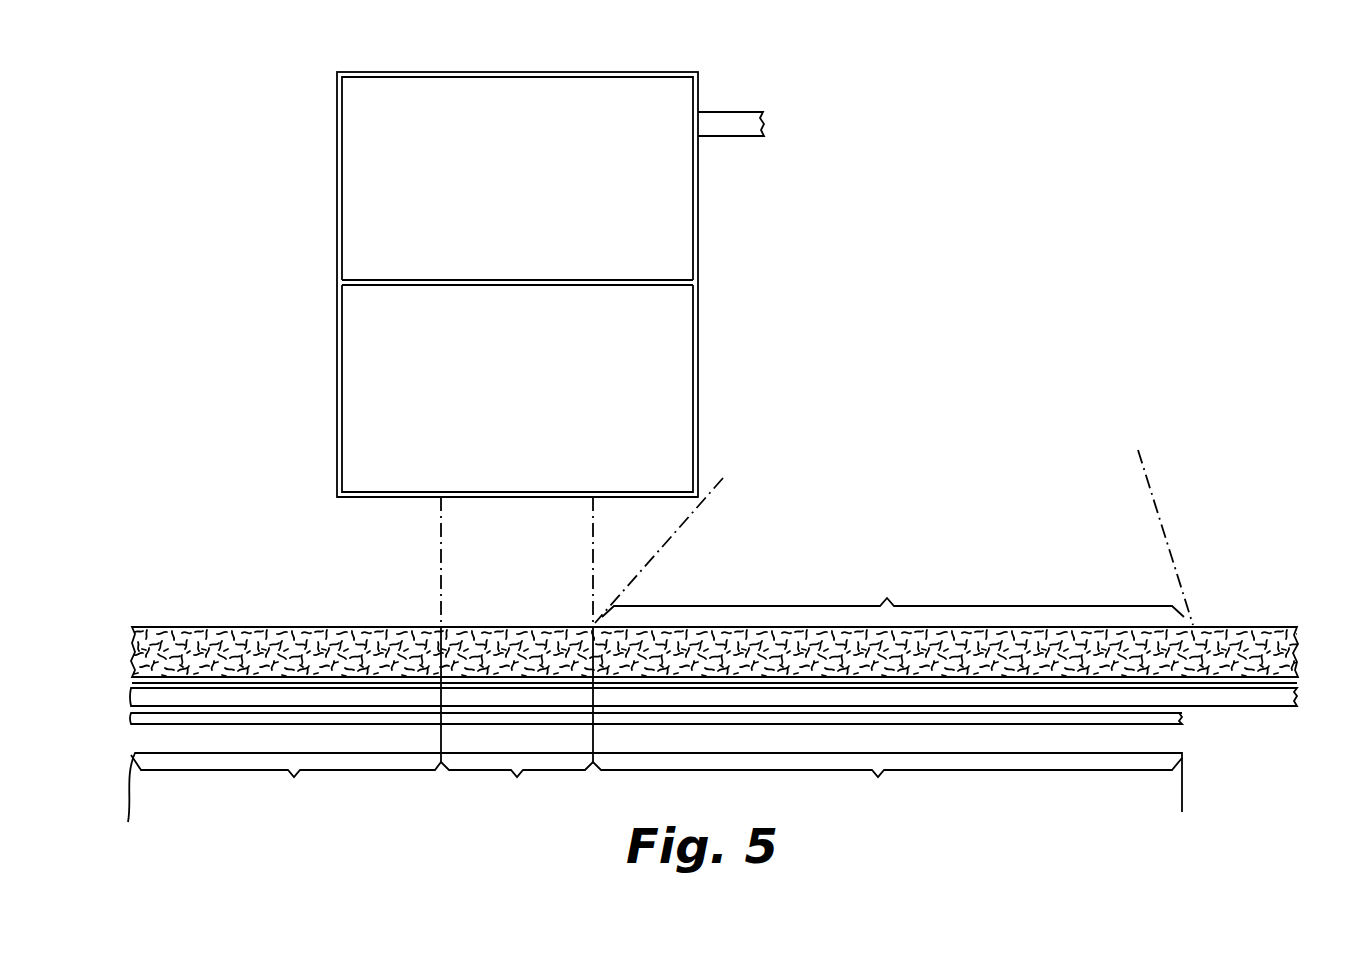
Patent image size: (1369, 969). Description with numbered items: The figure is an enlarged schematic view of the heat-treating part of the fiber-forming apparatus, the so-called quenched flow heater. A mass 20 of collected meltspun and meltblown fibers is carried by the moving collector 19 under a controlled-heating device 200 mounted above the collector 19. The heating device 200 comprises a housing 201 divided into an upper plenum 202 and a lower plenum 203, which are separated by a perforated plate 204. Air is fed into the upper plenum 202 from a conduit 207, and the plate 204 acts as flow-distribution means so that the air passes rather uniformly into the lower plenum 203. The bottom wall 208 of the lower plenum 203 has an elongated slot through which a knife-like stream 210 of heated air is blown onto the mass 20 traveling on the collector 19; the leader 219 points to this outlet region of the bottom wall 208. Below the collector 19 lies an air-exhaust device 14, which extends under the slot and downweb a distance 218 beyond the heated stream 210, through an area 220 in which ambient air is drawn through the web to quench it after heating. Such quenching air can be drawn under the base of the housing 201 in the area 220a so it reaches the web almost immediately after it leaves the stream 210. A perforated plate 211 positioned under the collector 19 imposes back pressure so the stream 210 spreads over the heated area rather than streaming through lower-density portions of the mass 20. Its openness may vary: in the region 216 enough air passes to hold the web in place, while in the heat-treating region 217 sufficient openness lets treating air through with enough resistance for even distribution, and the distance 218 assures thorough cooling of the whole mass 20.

The controlled-heating device 200 is at (750, 45).
The housing 201 is at (698, 247).
The upper plenum 202 is at (541, 184).
The lower plenum 203 is at (339, 133).
The plate 204 is at (522, 283).
The conduit 207 is at (752, 128).
The bottom wall 208 is at (345, 497).
The outlet 219 is at (452, 492).
The stream of heated air 210 is at (441, 530).
The area under the base of the housing 220a is at (668, 538).
The quenching area 220 is at (897, 537).
The mass of collected fibers 20 is at (268, 632).
The collector 19 is at (1295, 698).
The perforated plate 211 is at (1183, 718).
The air-exhaust device 14 is at (1172, 795).
The web-holding region 216 is at (286, 784).
The heat-treating region 217 is at (517, 787).
The downweb distance 218 is at (887, 785).